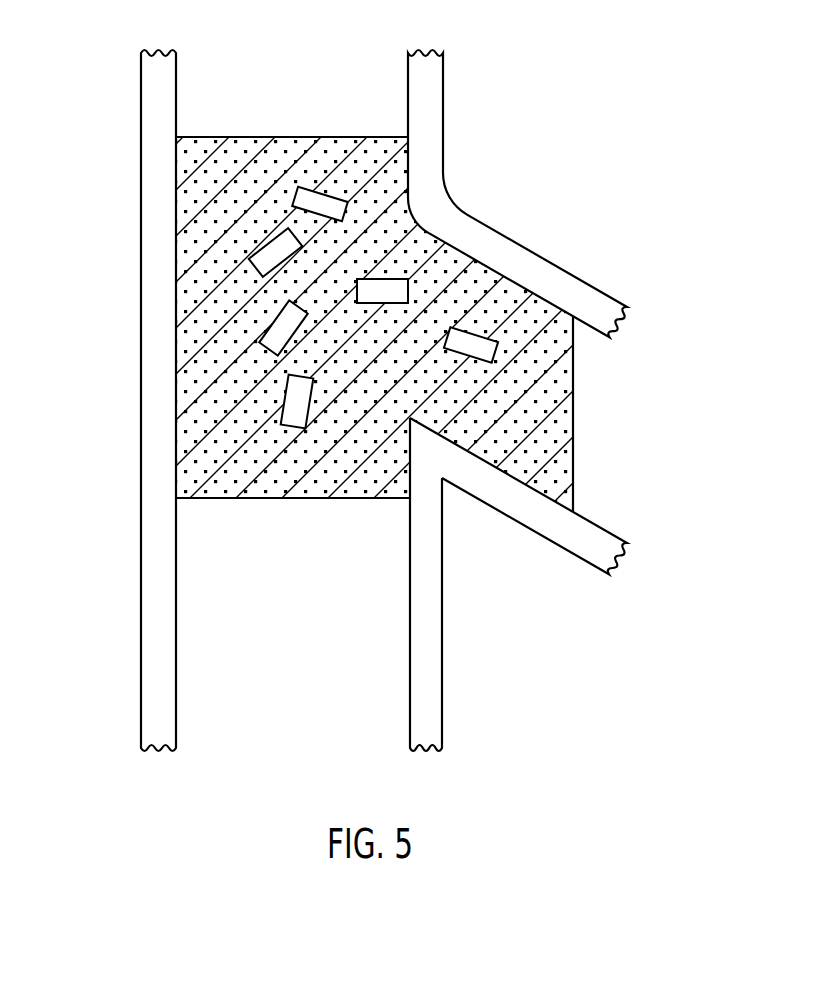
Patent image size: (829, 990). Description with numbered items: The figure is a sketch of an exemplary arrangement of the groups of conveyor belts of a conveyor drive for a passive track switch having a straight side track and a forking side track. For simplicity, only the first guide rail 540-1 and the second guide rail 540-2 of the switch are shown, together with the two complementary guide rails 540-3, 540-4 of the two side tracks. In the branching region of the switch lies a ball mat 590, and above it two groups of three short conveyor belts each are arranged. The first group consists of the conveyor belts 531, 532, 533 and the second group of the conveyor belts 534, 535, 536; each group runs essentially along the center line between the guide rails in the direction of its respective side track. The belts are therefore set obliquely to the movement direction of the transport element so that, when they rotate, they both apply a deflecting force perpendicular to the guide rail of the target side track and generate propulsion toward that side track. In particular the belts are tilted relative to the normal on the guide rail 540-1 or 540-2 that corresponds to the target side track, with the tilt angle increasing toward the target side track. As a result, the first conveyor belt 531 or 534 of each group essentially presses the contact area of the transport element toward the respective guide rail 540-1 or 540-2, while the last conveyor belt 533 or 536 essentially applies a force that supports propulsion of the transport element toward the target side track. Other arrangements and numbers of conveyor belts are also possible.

The first conveyor belt 531 is at (331, 194).
The conveyor belt 532 is at (381, 278).
The last conveyor belt 533 is at (465, 326).
The first conveyor belt 534 is at (262, 249).
The conveyor belt 535 is at (273, 319).
The last conveyor belt 536 is at (285, 394).
The ball mat 590 is at (313, 476).
The first guide rail 540-1 is at (438, 167).
The second guide rail 540-2 is at (148, 354).
The complementary guide rail 540-3 is at (502, 505).
The complementary guide rail 540-4 is at (438, 655).